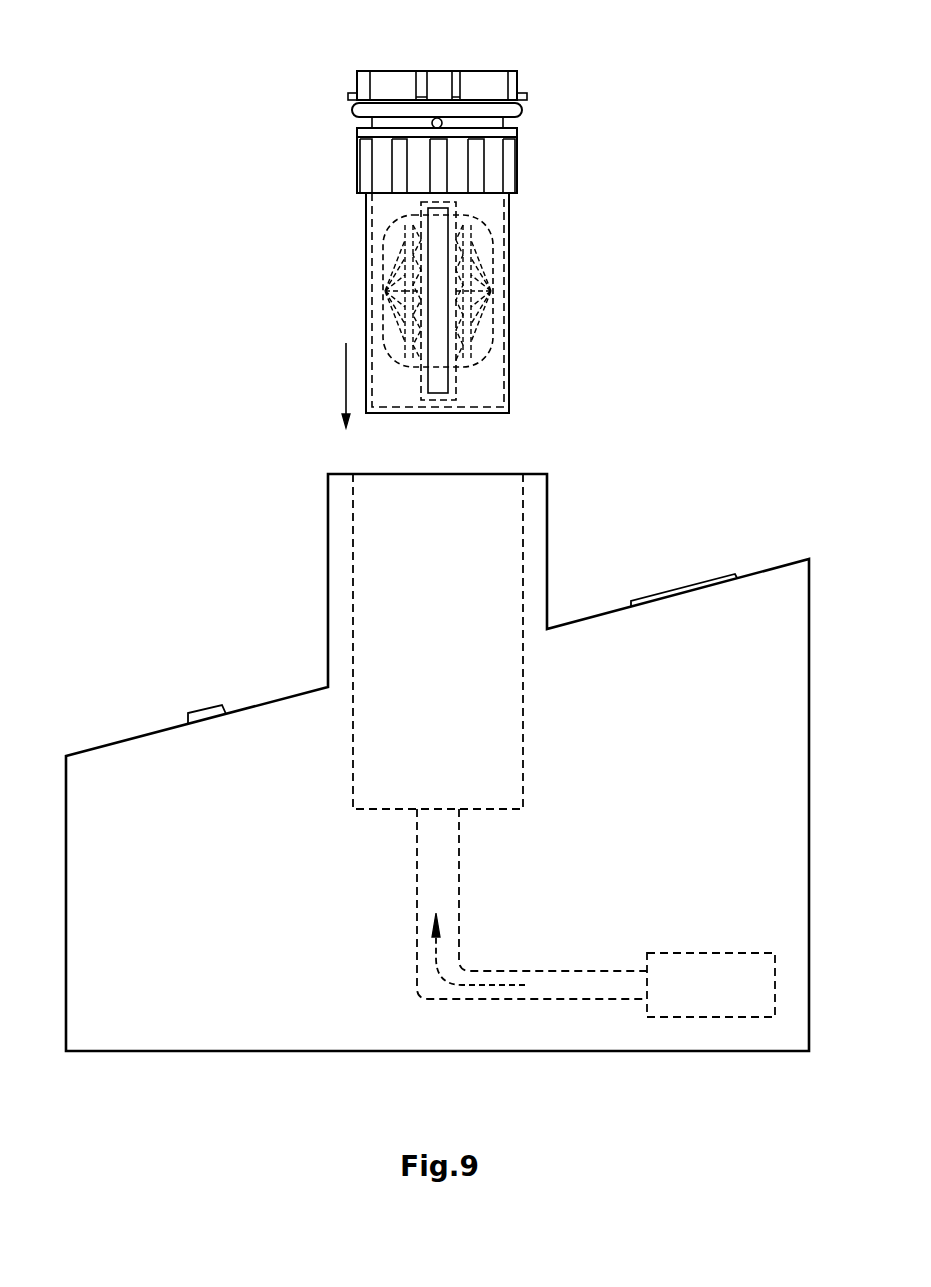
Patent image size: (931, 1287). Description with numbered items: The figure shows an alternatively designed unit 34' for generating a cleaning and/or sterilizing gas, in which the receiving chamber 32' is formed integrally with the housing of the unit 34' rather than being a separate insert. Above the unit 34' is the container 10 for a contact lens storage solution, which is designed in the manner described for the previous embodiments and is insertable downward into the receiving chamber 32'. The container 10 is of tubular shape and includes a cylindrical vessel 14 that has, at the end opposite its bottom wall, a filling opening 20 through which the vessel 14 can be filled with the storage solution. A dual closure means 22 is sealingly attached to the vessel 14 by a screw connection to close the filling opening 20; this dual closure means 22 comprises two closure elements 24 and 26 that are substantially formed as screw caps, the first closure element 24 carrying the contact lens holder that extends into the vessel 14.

The container 10 is at (468, 212).
The vessel 14 is at (328, 281).
The filling opening 20 is at (483, 474).
The dual closure means 22 is at (553, 134).
The first closure element 24 is at (383, 163).
The second closure element 26 is at (395, 87).
The receiving chamber 32' is at (501, 632).
The unit 34' is at (715, 565).